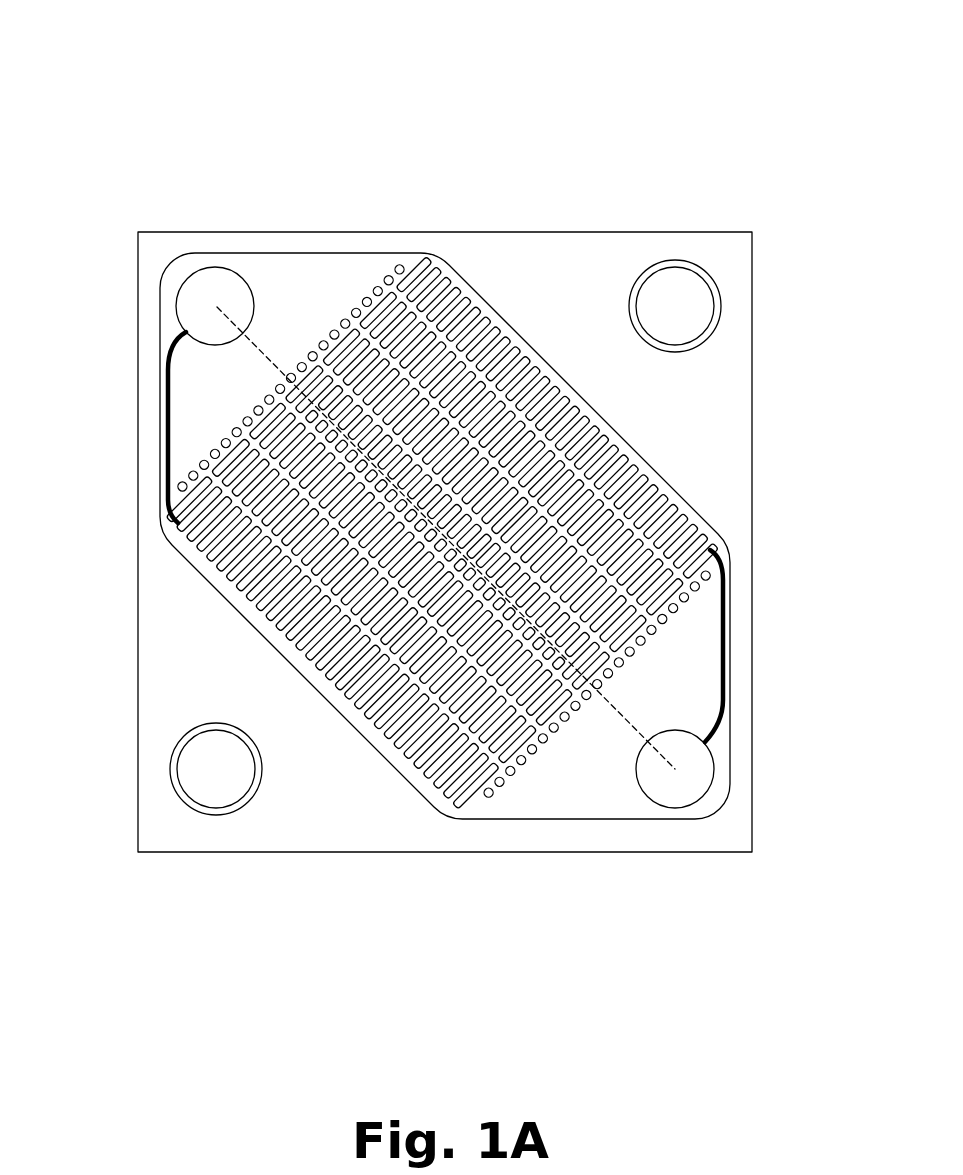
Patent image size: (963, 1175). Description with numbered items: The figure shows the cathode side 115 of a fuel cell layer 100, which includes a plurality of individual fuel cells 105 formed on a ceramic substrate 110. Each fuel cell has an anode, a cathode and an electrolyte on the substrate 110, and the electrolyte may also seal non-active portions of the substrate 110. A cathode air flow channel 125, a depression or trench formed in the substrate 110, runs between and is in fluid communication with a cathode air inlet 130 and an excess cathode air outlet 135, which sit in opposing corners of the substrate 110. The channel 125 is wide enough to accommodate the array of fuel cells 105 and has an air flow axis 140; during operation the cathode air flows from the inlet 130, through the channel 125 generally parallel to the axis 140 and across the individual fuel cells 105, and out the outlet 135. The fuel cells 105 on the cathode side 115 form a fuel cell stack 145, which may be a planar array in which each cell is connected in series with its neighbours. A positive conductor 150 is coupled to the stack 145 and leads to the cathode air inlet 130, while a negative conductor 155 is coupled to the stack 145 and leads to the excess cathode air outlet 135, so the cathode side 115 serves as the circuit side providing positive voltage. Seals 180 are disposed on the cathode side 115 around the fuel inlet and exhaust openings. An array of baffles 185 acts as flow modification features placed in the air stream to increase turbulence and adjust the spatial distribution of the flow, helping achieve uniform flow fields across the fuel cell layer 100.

The fuel cell layer 100 is at (155, 46).
The fuel cell 105 is at (438, 252).
The ceramic substrate 110 is at (569, 290).
The cathode side 115 is at (743, 396).
The cathode air flow channel 125 is at (552, 792).
The cathode air inlet 130 is at (217, 293).
The excess cathode air outlet 135 is at (675, 782).
The air flow axis 140 is at (271, 345).
The fuel cell stack 145 is at (226, 579).
The positive conductor 150 is at (168, 427).
The negative conductor 155 is at (723, 650).
The seals 180 is at (721, 308).
The array of baffles 185 is at (405, 263).